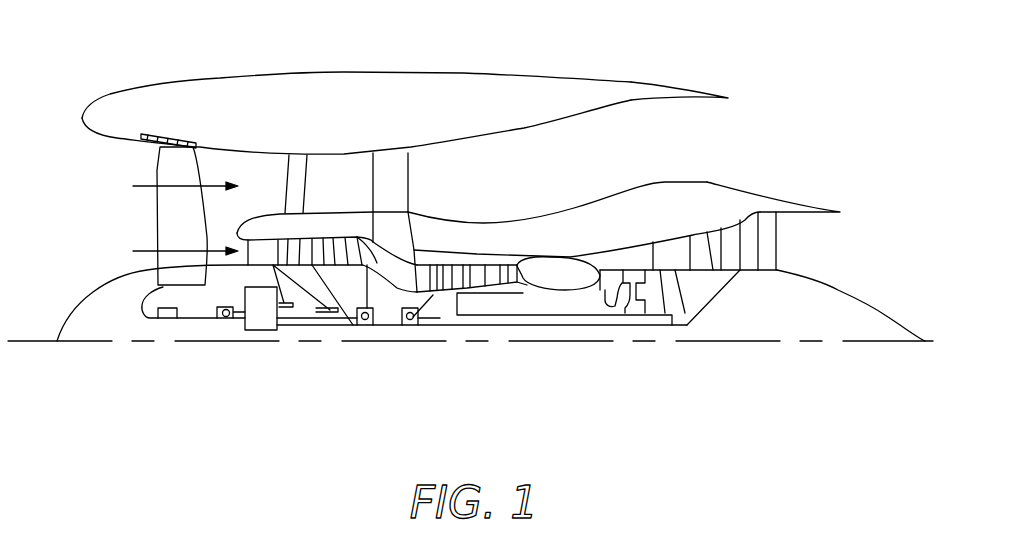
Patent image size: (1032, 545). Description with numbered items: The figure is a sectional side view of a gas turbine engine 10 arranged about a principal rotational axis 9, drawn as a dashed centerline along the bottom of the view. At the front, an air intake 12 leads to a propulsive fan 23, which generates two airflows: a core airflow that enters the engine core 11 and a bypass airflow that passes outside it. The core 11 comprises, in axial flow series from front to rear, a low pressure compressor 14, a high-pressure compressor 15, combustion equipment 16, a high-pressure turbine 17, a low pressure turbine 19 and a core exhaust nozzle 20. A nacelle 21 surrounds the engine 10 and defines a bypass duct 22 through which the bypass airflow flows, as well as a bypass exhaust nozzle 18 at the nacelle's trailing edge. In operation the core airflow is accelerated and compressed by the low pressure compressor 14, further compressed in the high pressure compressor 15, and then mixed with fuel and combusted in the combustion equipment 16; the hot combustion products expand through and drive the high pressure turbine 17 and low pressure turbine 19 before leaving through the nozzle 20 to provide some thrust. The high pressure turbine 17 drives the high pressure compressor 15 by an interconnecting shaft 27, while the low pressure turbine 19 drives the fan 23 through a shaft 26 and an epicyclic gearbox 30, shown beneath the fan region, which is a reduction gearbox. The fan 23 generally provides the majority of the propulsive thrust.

The principal rotational axis 9 is at (637, 342).
The gas turbine engine 10 is at (470, 215).
The core 11 is at (530, 218).
The air intake 12 is at (223, 238).
The low pressure compressor 14 is at (330, 243).
The high-pressure compressor 15 is at (473, 278).
The combustion equipment 16 is at (550, 277).
The high-pressure turbine 17 is at (613, 262).
The bypass exhaust nozzle 18 is at (733, 138).
The low pressure turbine 19 is at (748, 230).
The core exhaust nozzle 20 is at (820, 242).
The nacelle 21 is at (387, 85).
The bypass duct 22 is at (652, 153).
The propulsive fan 23 is at (163, 220).
The shaft 26 is at (470, 325).
The interconnecting shaft 27 is at (503, 315).
The epicyclic gearbox 30 is at (258, 330).